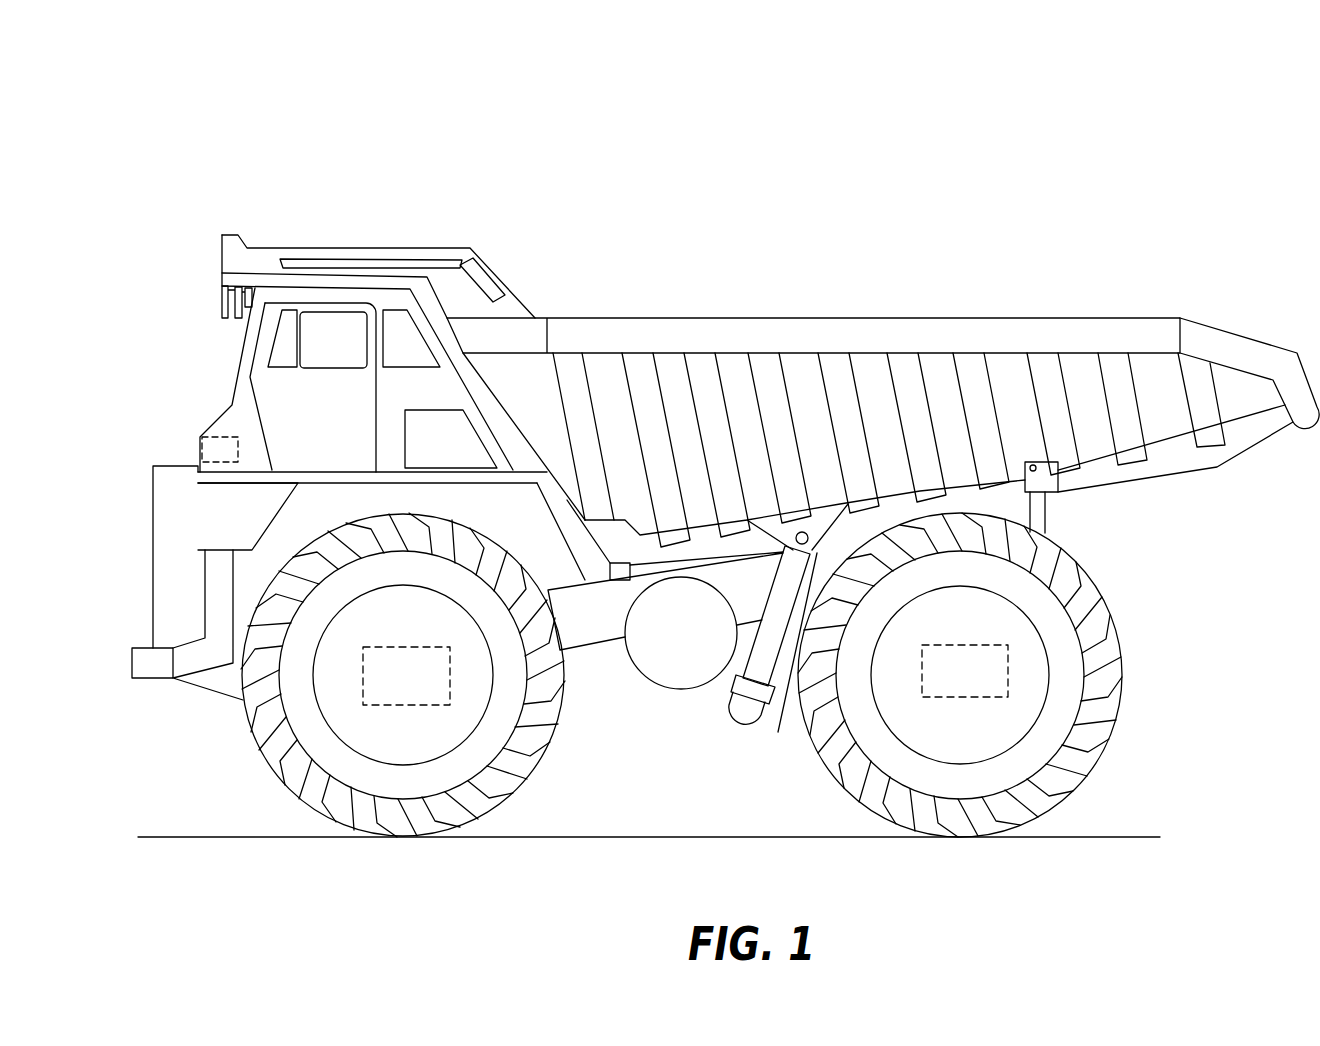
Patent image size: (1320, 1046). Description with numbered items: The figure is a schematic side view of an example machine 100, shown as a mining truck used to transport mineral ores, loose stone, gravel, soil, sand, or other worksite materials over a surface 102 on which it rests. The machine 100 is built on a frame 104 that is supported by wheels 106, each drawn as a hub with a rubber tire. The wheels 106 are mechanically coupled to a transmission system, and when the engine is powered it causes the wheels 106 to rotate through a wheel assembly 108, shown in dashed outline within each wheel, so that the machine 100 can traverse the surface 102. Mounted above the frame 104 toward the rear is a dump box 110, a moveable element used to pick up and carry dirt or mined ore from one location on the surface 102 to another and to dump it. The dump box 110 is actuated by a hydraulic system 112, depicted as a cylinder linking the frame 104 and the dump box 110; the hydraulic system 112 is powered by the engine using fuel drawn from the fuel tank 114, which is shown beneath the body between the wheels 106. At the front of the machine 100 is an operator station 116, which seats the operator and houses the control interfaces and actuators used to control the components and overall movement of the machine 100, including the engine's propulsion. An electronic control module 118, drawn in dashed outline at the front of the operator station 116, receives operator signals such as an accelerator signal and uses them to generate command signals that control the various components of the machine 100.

The machine 100 is at (1216, 76).
The surface 102 is at (170, 838).
The frame 104 is at (165, 558).
The wheels 106 is at (268, 758).
The wheel assembly 108 is at (440, 705).
The dump box 110 is at (925, 328).
The hydraulic system 112 is at (780, 735).
The fuel tank 114 is at (662, 670).
The operator station 116 is at (240, 359).
The electronic control module 118 is at (212, 450).